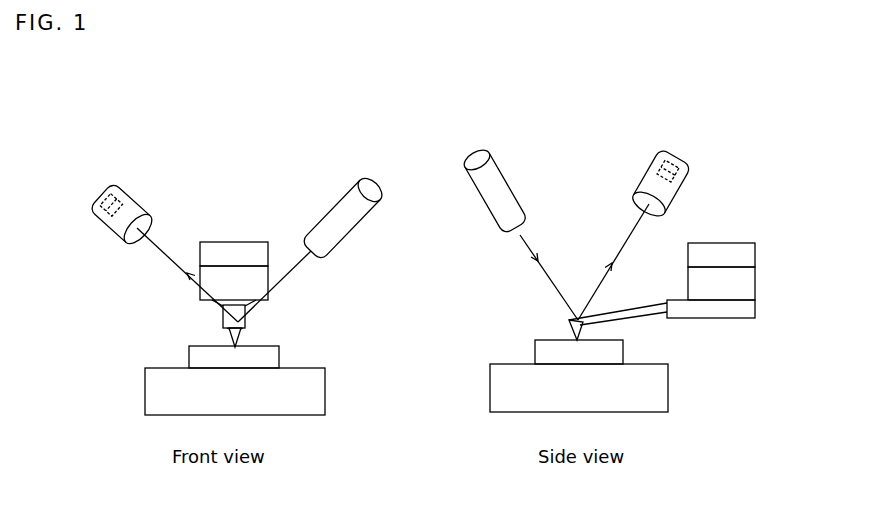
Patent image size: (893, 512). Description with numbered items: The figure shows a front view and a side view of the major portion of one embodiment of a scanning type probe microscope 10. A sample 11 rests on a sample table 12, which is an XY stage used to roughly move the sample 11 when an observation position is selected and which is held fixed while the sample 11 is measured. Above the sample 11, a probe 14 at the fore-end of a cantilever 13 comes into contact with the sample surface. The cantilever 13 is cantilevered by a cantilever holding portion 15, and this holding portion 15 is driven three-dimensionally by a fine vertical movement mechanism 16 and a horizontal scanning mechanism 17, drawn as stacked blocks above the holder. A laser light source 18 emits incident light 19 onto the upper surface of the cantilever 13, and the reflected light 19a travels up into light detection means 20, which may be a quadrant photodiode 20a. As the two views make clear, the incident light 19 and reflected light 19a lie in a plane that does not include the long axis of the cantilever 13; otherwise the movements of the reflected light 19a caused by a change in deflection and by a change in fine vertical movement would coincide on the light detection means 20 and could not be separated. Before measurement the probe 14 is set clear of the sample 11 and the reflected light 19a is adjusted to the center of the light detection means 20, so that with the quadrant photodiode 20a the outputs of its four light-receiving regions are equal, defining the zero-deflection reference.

The scanning type probe microscope 10 is at (440, 93).
The sample 11 is at (280, 354).
The sample table 12 is at (325, 392).
The cantilever 13 is at (224, 326).
The probe 14 is at (243, 340).
The cantilever holding portion 15 is at (222, 317).
The fine vertical movement mechanism 16 is at (269, 284).
The horizontal scanning mechanism 17 is at (238, 242).
The laser light source 18 is at (329, 210).
The incident light 19 is at (299, 263).
The reflected light 19a is at (165, 252).
The light detection means 20 is at (135, 186).
The quadrant photodiode 20a is at (104, 188).